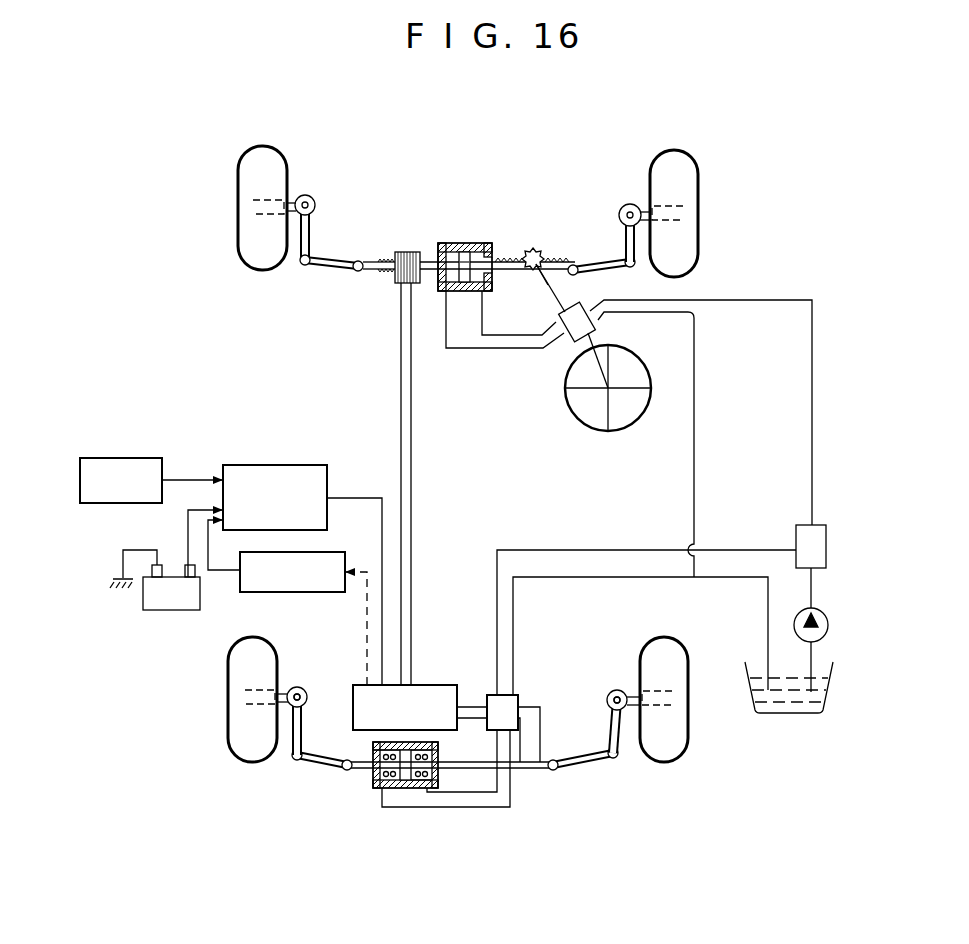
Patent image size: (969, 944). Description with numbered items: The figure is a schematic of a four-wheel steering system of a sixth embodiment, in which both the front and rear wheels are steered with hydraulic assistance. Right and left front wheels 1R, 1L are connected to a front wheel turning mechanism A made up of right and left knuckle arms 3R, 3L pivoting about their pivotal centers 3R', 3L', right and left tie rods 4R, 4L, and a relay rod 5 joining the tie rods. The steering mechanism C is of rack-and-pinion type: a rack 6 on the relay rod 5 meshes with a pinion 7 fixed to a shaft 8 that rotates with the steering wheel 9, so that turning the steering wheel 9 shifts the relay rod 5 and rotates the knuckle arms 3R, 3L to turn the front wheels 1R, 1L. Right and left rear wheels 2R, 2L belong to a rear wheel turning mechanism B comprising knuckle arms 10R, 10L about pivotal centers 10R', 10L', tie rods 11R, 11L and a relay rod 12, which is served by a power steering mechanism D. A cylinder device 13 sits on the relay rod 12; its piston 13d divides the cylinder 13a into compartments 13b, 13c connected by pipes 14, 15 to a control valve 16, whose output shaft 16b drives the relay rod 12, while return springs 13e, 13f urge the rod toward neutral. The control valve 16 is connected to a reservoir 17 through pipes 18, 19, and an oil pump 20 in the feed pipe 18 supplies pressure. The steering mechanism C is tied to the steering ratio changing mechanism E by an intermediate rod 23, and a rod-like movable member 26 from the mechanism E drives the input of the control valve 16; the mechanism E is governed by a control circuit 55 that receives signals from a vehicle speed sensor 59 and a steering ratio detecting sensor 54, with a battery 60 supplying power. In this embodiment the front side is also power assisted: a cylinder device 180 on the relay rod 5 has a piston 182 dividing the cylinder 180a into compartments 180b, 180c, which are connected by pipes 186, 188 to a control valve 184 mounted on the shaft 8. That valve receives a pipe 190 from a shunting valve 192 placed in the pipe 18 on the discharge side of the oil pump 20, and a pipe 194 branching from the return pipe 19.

The left front wheel 1L is at (238, 166).
The right front wheel 1R is at (700, 193).
The left rear wheel 2L is at (228, 738).
The right rear wheel 2R is at (688, 742).
The left knuckle arm 3L is at (321, 220).
The right knuckle arm 3R is at (614, 230).
The pivotal center 3L' is at (319, 180).
The pivotal center 3R' is at (611, 190).
The left tie rod 4L is at (332, 260).
The right tie rod 4R is at (592, 264).
The relay rod 5 is at (522, 270).
The rack 6 is at (526, 253).
The pinion 7 is at (542, 255).
The shaft 8 is at (598, 320).
The steering wheel 9 is at (632, 428).
The left knuckle arm 10L is at (272, 747).
The right knuckle arm 10R is at (637, 747).
The pivotal center 10L' is at (311, 662).
The pivotal center 10R' is at (599, 669).
The left tie rod 11L is at (325, 772).
The right tie rod 11R is at (592, 760).
The relay rod 12 is at (537, 770).
The cylinder device 13 is at (377, 790).
The cylinder 13a is at (404, 790).
The compartment 13b is at (396, 790).
The compartment 13c is at (414, 790).
The piston 13d is at (422, 790).
The return spring 13e is at (372, 748).
The return spring 13f is at (438, 748).
The pipe 14 is at (510, 808).
The pipe 15 is at (488, 794).
The control valve 16 is at (520, 695).
The output shaft 16b is at (542, 745).
The reservoir 17 is at (786, 714).
The pipe 18 is at (605, 548).
The pipe 19 is at (590, 580).
The oil pump 20 is at (828, 622).
The intermediate rod 23 is at (412, 487).
The rod-like movable member 26 is at (462, 700).
The steering ratio detecting sensor 54 is at (270, 593).
The control circuit 55 is at (283, 466).
The vehicle speed sensor 59 is at (142, 458).
The battery 60 is at (176, 611).
The cylinder device 180 is at (457, 241).
The cylinder 180a is at (440, 283).
The compartment 180b is at (440, 252).
The compartment 180c is at (485, 250).
The piston 182 is at (466, 286).
The control valve 184 is at (570, 333).
The pipe 186 is at (446, 349).
The pipe 188 is at (490, 336).
The pipe 190 is at (812, 370).
The shunting valve 192 is at (796, 538).
The pipe 194 is at (696, 470).
The front wheel turning mechanism A is at (372, 278).
The rear wheel turning mechanism B is at (315, 785).
The steering mechanism C is at (560, 404).
The power steering mechanism D is at (411, 820).
The steering ratio changing mechanism E is at (353, 700).